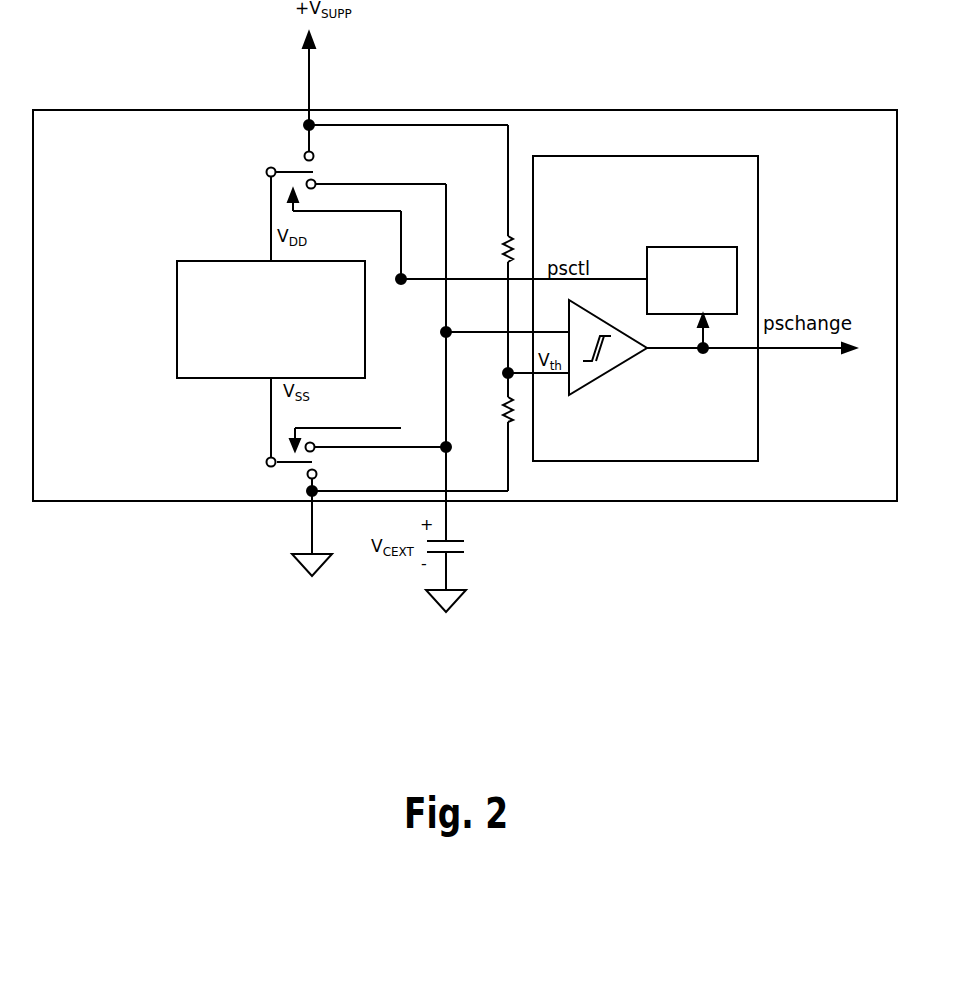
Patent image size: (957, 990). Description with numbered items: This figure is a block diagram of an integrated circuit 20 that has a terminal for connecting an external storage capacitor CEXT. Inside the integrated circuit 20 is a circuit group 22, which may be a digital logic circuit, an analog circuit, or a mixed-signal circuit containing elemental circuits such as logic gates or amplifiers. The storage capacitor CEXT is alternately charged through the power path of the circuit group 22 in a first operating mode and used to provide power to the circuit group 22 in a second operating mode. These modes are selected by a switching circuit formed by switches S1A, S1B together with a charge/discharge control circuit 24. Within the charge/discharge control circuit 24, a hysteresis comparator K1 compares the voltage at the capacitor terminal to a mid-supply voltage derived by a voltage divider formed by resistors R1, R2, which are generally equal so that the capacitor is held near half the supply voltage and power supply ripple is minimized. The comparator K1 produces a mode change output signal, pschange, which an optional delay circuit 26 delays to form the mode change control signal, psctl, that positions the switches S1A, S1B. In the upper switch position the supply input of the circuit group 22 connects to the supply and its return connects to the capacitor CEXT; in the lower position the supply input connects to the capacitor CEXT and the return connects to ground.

The integrated circuit 20 is at (465, 305).
The circuit group 22 is at (271, 319).
The charge/discharge control circuit 24 is at (645, 308).
The delay circuit 26 is at (692, 280).
The switch S1A is at (341, 145).
The switch S1B is at (273, 480).
The resistor R1 is at (491, 249).
The resistor R2 is at (491, 409).
The hysteresis comparator K1 is at (612, 372).
The external storage capacitor CEXT is at (495, 556).